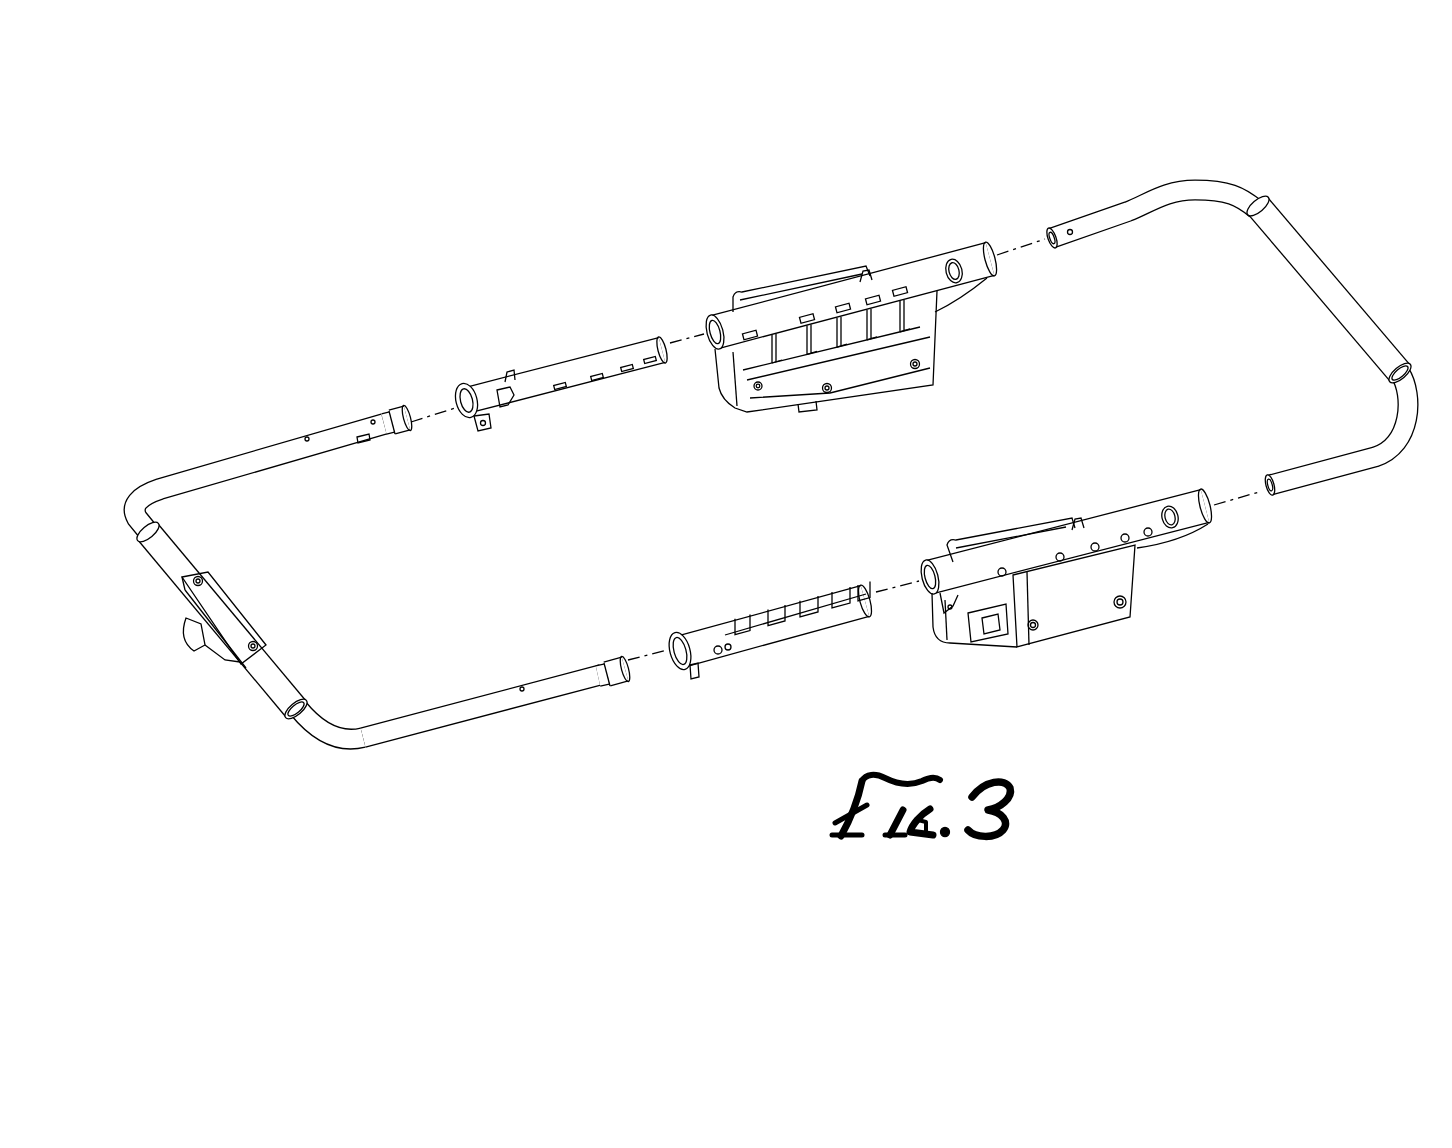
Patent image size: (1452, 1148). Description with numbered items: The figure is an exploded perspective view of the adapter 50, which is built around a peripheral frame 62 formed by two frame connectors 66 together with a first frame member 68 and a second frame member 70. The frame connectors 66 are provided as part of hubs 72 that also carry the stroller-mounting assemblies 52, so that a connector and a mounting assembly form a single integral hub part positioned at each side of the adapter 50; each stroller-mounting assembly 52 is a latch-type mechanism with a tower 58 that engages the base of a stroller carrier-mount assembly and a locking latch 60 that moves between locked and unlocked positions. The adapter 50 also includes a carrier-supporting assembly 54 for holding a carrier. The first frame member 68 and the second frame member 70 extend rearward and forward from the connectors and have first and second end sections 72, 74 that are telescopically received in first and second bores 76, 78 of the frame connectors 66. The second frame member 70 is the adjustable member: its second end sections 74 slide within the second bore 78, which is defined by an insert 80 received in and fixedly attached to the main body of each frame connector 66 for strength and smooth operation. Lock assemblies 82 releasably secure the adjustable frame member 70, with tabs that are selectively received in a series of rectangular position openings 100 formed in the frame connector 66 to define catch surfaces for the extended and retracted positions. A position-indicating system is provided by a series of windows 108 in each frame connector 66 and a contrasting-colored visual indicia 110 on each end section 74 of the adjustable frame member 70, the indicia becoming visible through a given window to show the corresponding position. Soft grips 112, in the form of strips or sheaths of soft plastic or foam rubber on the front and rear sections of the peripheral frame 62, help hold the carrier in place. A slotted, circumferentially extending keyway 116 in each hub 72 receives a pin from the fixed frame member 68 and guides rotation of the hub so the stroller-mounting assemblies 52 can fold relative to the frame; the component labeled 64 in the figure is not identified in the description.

The adapter 50 is at (784, 489).
The stroller-mounting assembly 52 is at (932, 648).
The carrier-supporting assembly 54 is at (935, 598).
The tower 58 is at (1140, 587).
The locking latch 60 is at (995, 636).
The peripheral frame 62 is at (458, 733).
The frame portion 64 is at (368, 602).
The frame connector 66 is at (871, 261).
The first frame member 68 is at (1425, 424).
The second frame member 70 is at (307, 734).
The first end section 72 is at (904, 238).
The second end section 74 is at (347, 415).
The first bore 76 is at (1031, 259).
The second bore 78 is at (458, 420).
The insert 80 is at (599, 397).
The lock assembly 82 is at (389, 454).
The position opening 100 is at (910, 284).
The window 108 is at (1010, 561).
The visual indicia 110 is at (402, 401).
The grip 112 is at (264, 699).
The keyway 116 is at (1187, 503).